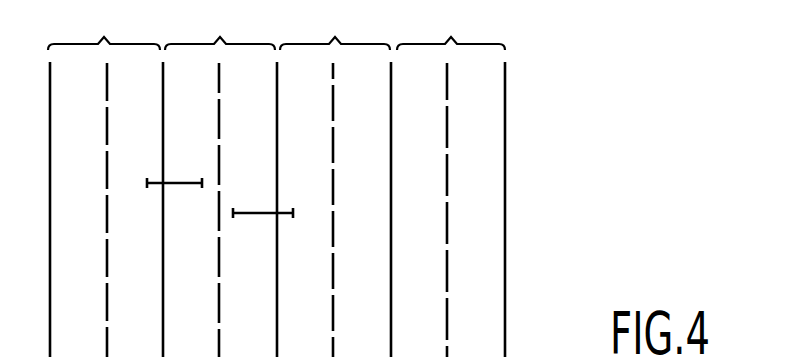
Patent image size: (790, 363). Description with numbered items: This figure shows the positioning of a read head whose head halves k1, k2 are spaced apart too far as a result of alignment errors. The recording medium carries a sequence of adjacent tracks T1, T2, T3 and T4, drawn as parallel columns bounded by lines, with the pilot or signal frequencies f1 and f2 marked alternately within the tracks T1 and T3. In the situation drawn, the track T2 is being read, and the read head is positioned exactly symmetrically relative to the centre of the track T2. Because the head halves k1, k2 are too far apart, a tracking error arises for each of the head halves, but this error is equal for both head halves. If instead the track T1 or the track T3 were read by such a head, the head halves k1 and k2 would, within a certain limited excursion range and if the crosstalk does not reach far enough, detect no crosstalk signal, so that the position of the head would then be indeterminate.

The track T1 is at (104, 27).
The track T2 is at (220, 27).
The track T3 is at (335, 27).
The track T4 is at (451, 27).
The first frequency f1 is at (190, 92).
The second frequency f2 is at (248, 94).
The head half k1 is at (174, 166).
The head half k2 is at (263, 196).